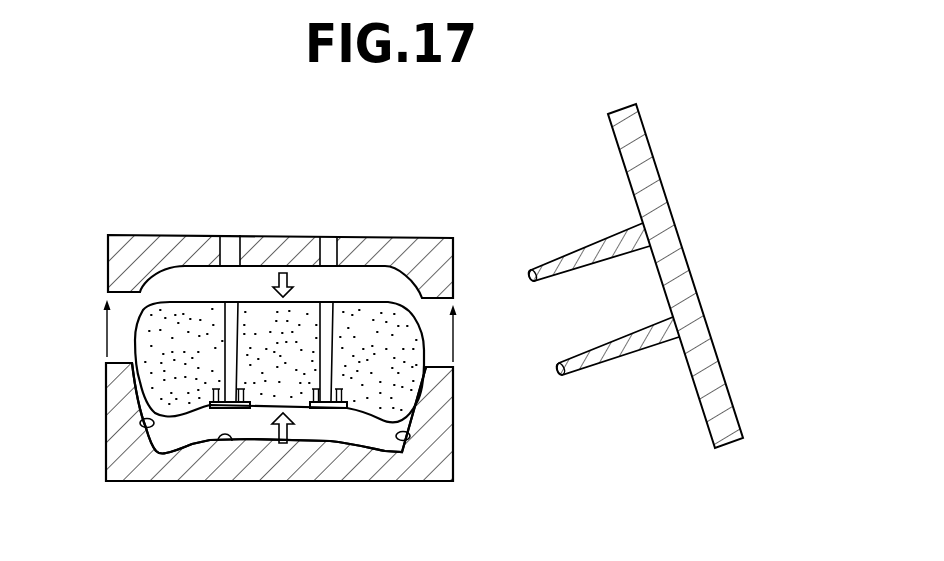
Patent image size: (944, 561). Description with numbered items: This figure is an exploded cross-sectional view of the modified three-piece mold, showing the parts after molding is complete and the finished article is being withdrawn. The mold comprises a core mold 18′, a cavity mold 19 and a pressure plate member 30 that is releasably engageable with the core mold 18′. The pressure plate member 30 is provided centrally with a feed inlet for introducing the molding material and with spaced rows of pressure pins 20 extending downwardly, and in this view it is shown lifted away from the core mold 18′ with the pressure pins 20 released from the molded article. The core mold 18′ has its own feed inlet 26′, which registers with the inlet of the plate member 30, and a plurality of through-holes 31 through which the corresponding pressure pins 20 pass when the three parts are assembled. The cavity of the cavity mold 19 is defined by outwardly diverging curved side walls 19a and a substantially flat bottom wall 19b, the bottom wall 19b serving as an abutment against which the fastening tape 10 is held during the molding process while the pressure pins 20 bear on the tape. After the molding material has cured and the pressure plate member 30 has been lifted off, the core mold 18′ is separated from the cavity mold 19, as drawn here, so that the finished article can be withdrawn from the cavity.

The core mold 18′ is at (123, 236).
The through-holes 31 is at (228, 238).
The feed inlet 26′ is at (281, 262).
The cavity mold 19 is at (443, 421).
The curved side walls 19a is at (143, 423).
The bottom wall 19b is at (224, 442).
The fastening tape 10 is at (328, 409).
The pressure plate member 30 is at (639, 147).
The pressure pins 20 is at (630, 350).